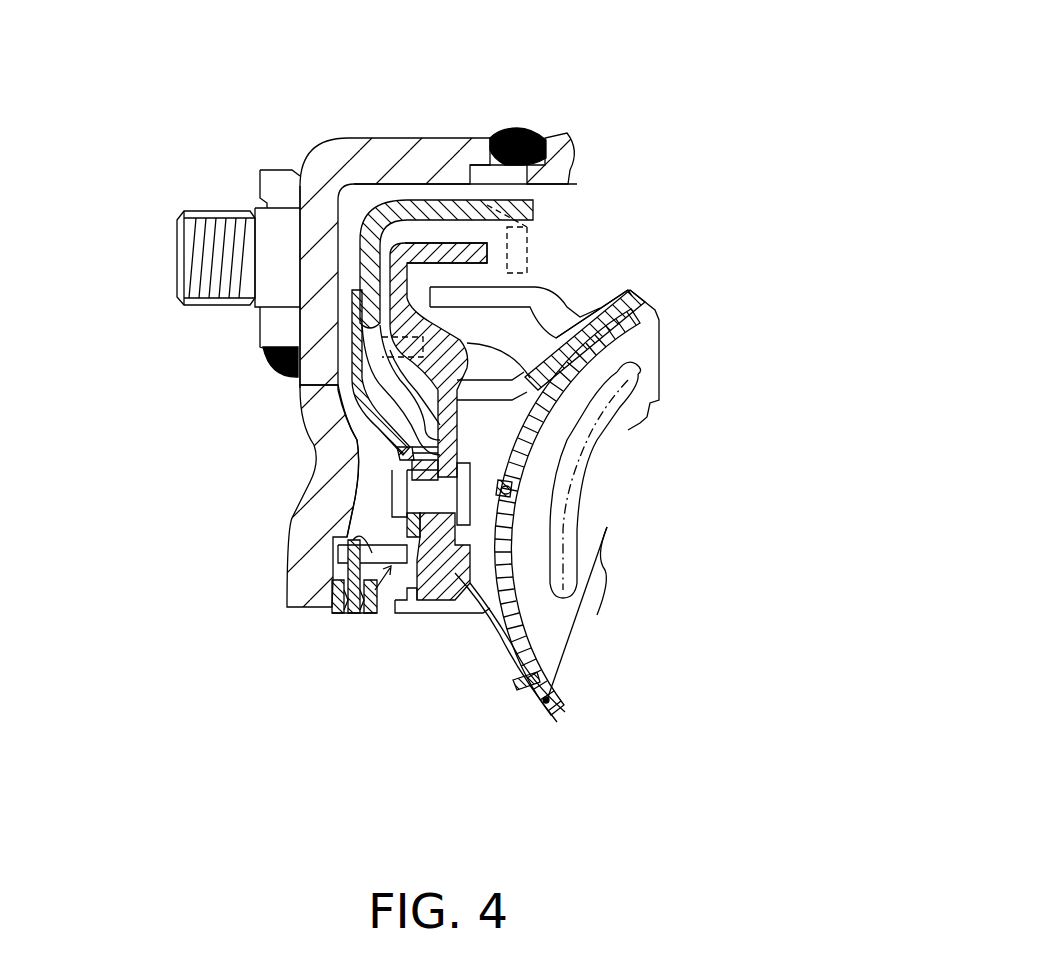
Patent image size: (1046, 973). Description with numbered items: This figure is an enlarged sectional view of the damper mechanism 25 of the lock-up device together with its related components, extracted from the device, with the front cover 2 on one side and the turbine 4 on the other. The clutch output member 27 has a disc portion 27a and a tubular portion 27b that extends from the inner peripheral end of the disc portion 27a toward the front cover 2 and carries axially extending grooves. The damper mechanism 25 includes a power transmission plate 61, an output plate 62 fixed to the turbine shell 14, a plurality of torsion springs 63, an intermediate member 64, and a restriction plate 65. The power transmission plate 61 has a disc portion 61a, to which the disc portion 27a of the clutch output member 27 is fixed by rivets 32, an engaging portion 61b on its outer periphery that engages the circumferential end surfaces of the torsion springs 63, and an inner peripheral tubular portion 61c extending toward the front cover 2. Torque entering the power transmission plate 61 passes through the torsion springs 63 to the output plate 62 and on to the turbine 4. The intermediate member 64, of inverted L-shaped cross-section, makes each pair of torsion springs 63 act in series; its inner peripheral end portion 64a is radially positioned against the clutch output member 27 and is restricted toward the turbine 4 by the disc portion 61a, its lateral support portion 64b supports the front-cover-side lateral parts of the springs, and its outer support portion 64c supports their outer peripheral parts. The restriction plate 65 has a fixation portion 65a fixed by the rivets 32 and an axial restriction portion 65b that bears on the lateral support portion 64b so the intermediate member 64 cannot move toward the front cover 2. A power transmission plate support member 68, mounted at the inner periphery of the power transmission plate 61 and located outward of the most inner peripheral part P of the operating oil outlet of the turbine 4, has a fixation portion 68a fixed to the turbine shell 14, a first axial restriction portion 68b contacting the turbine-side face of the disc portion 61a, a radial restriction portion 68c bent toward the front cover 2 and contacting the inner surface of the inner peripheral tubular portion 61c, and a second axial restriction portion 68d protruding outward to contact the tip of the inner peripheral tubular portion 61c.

The front cover 2 is at (313, 413).
The turbine 4 is at (664, 378).
The turbine shell 14 is at (650, 310).
The damper mechanism 25 is at (637, 192).
The clutch output member 27 is at (337, 593).
The disc portion 27a is at (392, 487).
The tubular portion 27b is at (353, 547).
The rivets 32 is at (453, 492).
The power transmission plate 61 is at (467, 445).
The disc portion 61a is at (447, 457).
The engaging portion 61b is at (440, 243).
The inner peripheral tubular portion 61c is at (410, 610).
The output plate 62 is at (553, 303).
The torsion springs 63 is at (527, 283).
The intermediate member 64 is at (378, 200).
The inner peripheral end portion 64a is at (423, 445).
The lateral support portion 64b is at (253, 303).
The outer support portion 64c is at (403, 220).
The restriction plate 65 is at (347, 322).
The fixation portion 65a is at (400, 520).
The axial restriction portion 65b is at (293, 372).
The power transmission plate support member 68 is at (492, 632).
The fixation portion 68a is at (483, 645).
The first axial restriction portion 68b is at (463, 557).
The radial restriction portion 68c is at (450, 608).
The second axial restriction portion 68d is at (385, 612).
The most inner peripheral part of operating oil outlet P is at (547, 700).